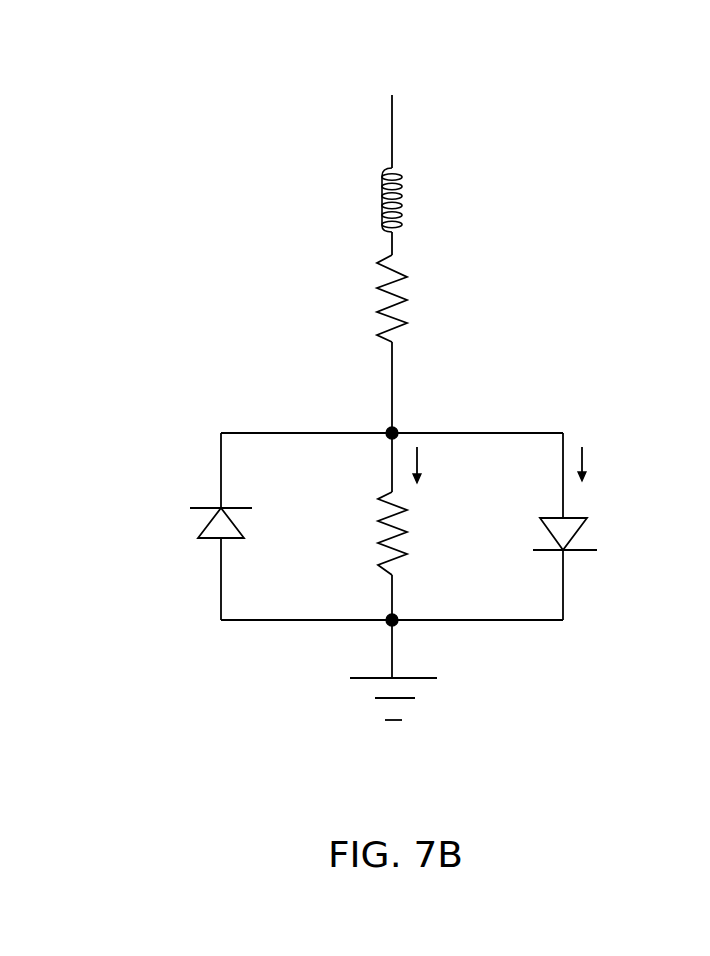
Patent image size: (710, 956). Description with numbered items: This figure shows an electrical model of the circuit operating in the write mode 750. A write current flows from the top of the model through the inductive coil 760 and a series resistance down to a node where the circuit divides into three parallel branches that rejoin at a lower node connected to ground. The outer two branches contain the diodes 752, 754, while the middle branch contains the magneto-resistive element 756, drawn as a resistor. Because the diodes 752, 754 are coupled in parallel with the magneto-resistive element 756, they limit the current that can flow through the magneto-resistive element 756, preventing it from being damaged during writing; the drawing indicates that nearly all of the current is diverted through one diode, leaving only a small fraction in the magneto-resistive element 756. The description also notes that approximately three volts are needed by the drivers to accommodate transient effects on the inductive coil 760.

The write mode 750 is at (545, 130).
The inductive coil 760 is at (262, 220).
The diode 752 is at (158, 525).
The diode 754 is at (580, 580).
The magneto-resistive element 756 is at (355, 565).